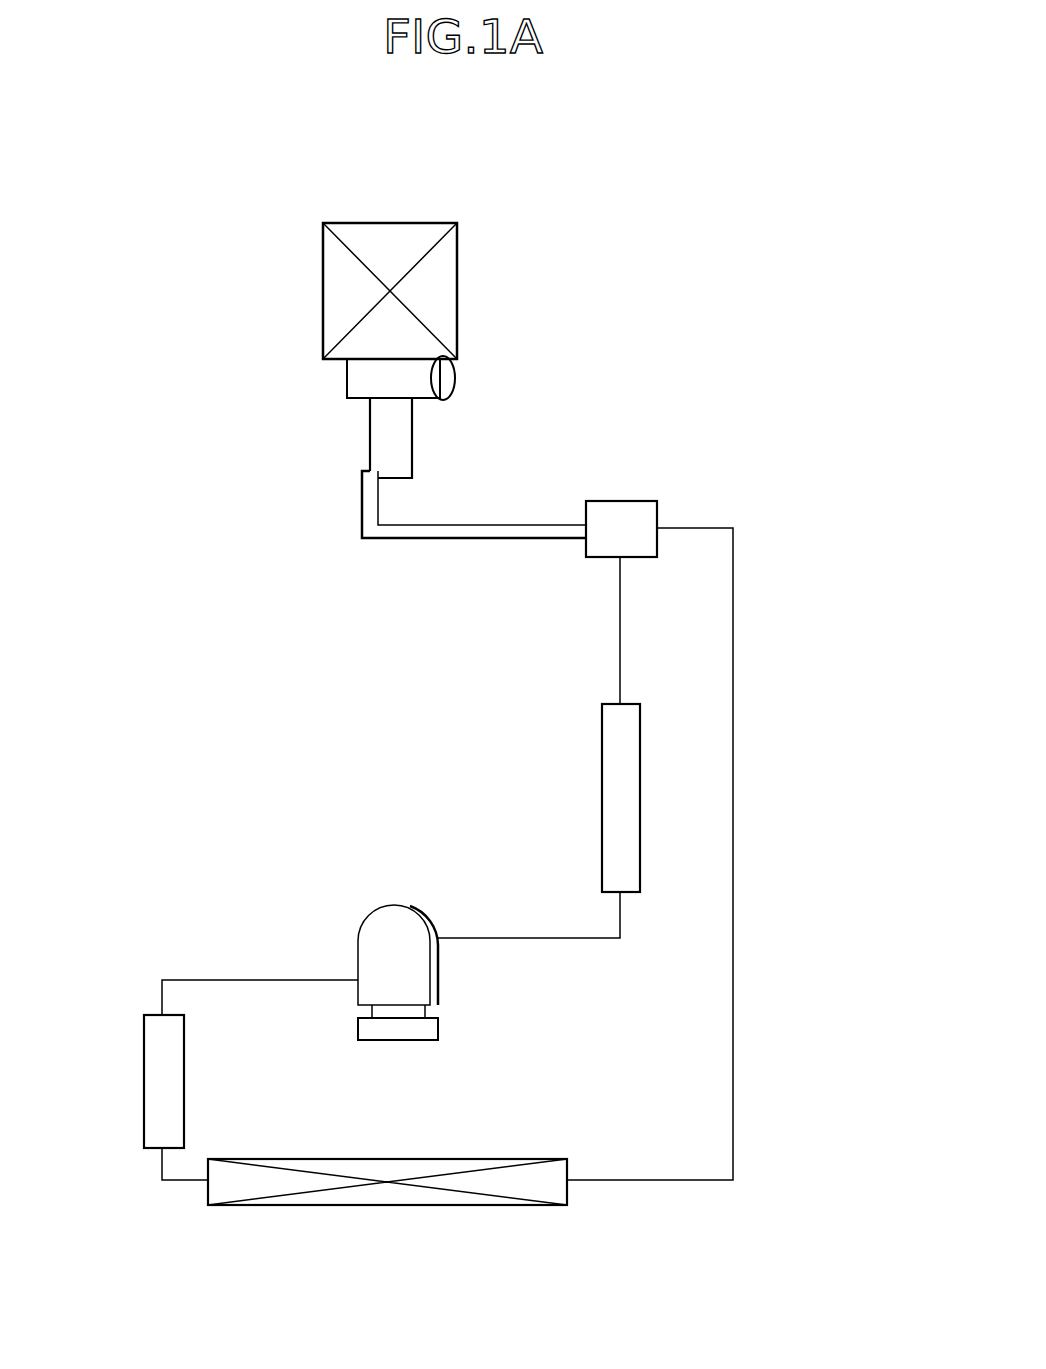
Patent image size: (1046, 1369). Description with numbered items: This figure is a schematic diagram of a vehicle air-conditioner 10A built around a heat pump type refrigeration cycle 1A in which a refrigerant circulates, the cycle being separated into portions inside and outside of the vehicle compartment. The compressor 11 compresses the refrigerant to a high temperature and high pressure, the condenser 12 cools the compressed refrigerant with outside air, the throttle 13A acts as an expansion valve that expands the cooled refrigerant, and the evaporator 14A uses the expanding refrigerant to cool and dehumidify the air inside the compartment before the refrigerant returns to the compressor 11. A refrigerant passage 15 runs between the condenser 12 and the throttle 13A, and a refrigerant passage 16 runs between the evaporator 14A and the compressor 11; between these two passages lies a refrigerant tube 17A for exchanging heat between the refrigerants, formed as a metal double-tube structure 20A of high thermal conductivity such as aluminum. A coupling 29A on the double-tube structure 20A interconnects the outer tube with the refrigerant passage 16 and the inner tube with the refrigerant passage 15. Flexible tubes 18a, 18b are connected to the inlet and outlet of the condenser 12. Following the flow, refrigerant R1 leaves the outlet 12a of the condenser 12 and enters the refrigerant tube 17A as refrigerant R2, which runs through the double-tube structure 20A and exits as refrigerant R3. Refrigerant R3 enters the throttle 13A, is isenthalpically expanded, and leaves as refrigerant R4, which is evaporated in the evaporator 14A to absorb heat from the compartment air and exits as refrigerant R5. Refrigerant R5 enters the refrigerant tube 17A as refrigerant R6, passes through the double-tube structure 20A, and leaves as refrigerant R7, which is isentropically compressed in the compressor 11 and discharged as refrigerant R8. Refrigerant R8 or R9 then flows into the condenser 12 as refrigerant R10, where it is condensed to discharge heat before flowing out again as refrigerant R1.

The refrigeration cycle 1A is at (621, 221).
The vehicle air-conditioner 10A is at (652, 435).
The compressor 11 is at (369, 920).
The condenser 12 is at (520, 1206).
The outlet 12a is at (572, 1190).
The throttle 13A is at (456, 384).
The evaporator 14A is at (400, 223).
The refrigerant passage 15 is at (733, 640).
The refrigerant passage 16 is at (535, 937).
The refrigerant tube 17A is at (539, 479).
The flexible tube 18a is at (641, 790).
The flexible tube 18b is at (185, 1078).
The double-tube structure 20A is at (397, 539).
The coupling 29A is at (658, 508).
The refrigerant R1 is at (588, 480).
The refrigerant R2 is at (455, 508).
The refrigerant R3 is at (435, 408).
The refrigerant R4 is at (456, 370).
The refrigerant R5 is at (345, 410).
The refrigerant R6 is at (532, 567).
The refrigerant R7 is at (597, 587).
The refrigerant R8 is at (222, 942).
The refrigerant R9 is at (113, 1025).
The refrigerant R10 is at (451, 1252).